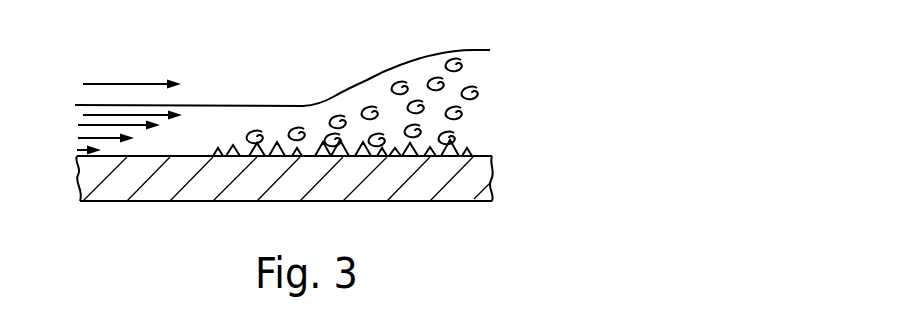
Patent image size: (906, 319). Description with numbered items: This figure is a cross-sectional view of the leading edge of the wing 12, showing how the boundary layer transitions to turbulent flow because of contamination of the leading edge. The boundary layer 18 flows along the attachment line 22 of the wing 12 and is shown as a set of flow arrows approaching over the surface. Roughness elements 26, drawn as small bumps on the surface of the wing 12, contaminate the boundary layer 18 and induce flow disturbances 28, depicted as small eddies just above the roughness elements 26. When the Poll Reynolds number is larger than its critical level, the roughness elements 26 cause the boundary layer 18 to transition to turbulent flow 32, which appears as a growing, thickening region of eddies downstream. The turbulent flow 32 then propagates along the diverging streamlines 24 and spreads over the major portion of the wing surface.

The wing 12 is at (413, 185).
The boundary layer 18 is at (88, 124).
The attachment line 22 is at (143, 82).
The diverging streamlines 24 is at (480, 50).
The roughness elements 26 is at (220, 147).
The flow disturbances 28 is at (290, 128).
The turbulent flow 32 is at (430, 79).